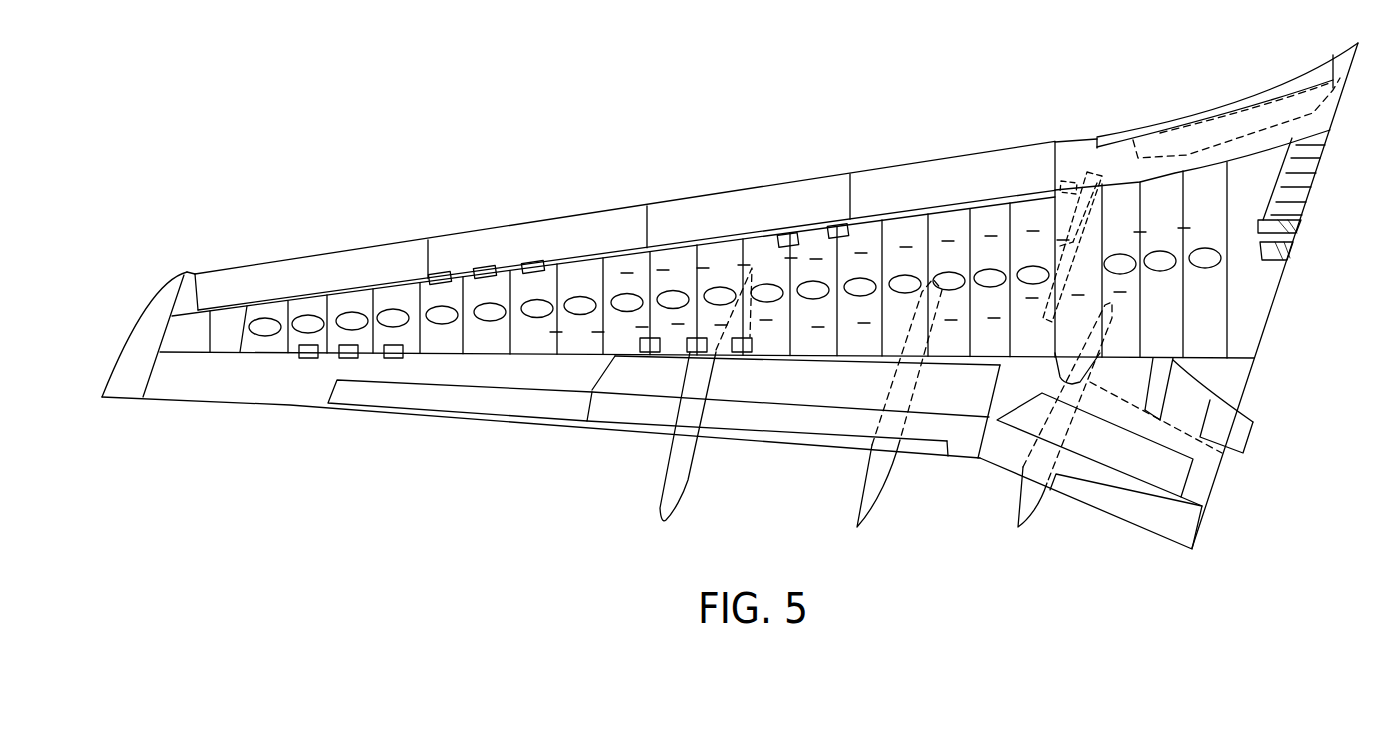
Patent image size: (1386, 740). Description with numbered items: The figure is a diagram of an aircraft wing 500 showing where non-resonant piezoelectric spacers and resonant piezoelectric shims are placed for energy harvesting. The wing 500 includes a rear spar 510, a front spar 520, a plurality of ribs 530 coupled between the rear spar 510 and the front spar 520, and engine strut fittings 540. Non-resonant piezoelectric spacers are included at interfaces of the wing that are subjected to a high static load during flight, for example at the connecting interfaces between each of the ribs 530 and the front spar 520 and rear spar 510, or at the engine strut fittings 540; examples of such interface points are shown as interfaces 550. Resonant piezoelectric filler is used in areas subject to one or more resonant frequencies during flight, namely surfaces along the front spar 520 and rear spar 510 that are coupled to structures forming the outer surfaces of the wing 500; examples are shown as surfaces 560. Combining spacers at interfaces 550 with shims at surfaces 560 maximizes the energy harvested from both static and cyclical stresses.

The aircraft wing 500 is at (738, 558).
The rear spar 510 is at (577, 355).
The front spar 520 is at (713, 240).
The ribs 530 is at (928, 230).
The engine strut fittings 540 is at (1067, 182).
The interface points 550 is at (837, 224).
The surfaces 560 is at (534, 263).